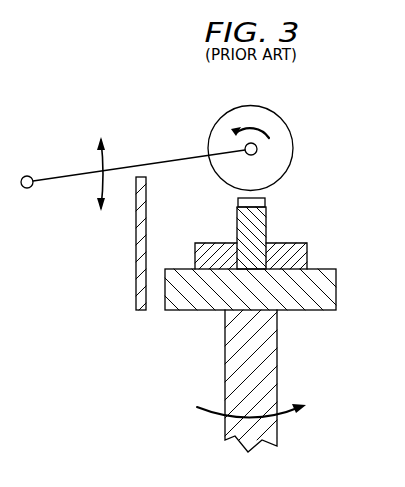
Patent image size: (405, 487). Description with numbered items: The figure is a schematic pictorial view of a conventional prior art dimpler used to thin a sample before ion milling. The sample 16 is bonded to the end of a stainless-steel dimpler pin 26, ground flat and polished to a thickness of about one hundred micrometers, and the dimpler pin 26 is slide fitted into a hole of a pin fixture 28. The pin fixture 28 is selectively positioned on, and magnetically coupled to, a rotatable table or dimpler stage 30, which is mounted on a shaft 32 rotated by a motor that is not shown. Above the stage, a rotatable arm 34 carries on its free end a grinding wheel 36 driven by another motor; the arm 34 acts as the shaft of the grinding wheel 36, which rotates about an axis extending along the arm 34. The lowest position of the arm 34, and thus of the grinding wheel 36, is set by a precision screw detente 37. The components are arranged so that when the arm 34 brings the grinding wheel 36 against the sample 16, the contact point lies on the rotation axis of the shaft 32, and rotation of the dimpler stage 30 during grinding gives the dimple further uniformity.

The sample 16 is at (265, 203).
The dimpler pin 26 is at (266, 218).
The pin fixture 28 is at (296, 255).
The dimpler stage 30 is at (327, 287).
The shaft 32 is at (267, 353).
The rotatable arm 34 is at (58, 180).
The grinding wheel 36 is at (287, 123).
The precision screw detente 37 is at (136, 261).